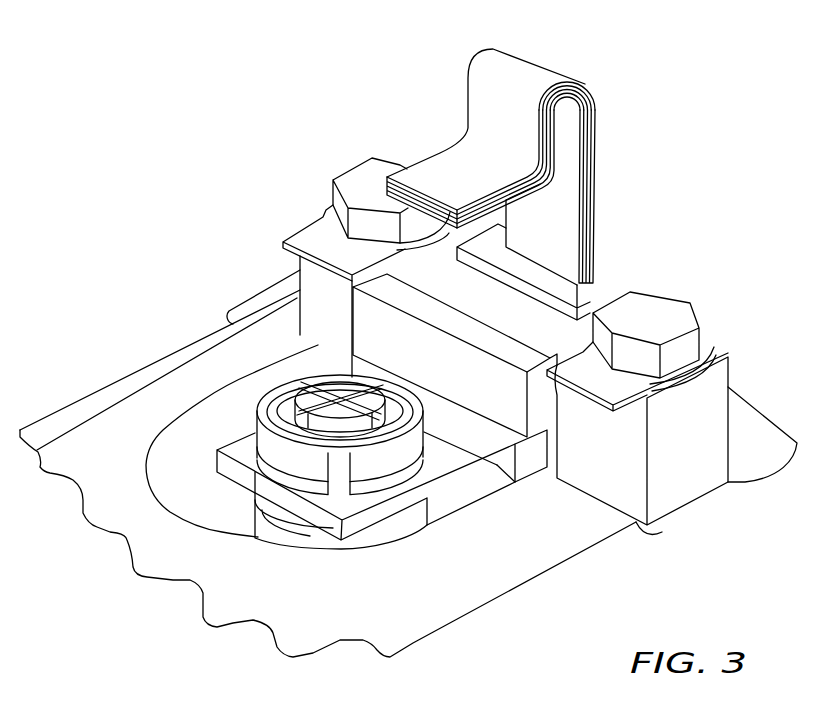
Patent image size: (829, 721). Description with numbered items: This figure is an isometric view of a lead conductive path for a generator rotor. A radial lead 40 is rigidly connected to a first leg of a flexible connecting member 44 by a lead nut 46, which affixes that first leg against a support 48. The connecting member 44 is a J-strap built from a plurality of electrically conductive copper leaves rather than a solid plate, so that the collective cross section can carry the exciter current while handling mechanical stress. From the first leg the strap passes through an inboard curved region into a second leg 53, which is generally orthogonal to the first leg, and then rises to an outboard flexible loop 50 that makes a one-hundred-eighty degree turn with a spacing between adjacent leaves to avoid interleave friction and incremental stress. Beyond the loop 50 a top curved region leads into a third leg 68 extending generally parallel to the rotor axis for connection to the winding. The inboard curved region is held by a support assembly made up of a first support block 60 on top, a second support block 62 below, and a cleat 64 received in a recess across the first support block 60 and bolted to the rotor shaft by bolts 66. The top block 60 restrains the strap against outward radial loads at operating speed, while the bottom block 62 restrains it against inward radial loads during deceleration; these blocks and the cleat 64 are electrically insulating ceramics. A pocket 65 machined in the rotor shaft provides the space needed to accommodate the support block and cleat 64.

The radial lead 40 is at (310, 393).
The flexible connecting member 44 is at (600, 85).
The lead nut 46 is at (268, 455).
The support 48 is at (273, 527).
The outboard flexible loop 50 is at (513, 50).
The second leg 53 is at (558, 195).
The first support block 60 is at (378, 328).
The second support block 62 is at (527, 463).
The cleat 64 is at (538, 325).
The pocket 65 is at (457, 497).
The bolts 66 is at (368, 180).
The third leg 68 is at (450, 157).